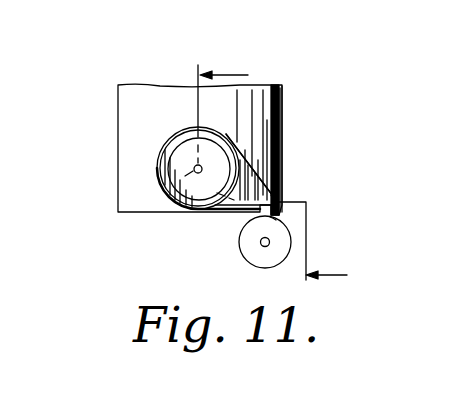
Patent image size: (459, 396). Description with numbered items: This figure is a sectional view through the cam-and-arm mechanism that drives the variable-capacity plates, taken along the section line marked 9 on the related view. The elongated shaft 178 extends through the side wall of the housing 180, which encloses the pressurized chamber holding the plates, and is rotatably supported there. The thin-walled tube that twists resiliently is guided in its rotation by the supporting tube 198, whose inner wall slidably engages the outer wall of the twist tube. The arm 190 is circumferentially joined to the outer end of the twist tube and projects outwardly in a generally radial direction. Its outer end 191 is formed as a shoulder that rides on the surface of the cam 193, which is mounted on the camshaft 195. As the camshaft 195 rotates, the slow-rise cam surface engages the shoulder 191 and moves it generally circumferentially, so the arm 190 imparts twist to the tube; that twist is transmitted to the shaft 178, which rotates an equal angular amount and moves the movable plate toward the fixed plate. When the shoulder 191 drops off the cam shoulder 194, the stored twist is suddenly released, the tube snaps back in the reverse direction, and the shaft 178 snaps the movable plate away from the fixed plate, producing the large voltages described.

The housing 180 is at (107, 116).
The supporting tube 198 is at (188, 128).
The elongated shaft 178 is at (163, 188).
The arm 190 is at (241, 186).
The outer end of the arm 191 is at (277, 205).
The cam 193 is at (287, 250).
The cam shoulder 194 is at (281, 223).
The camshaft 195 is at (260, 242).
The section line 9- 9 is at (262, 174).